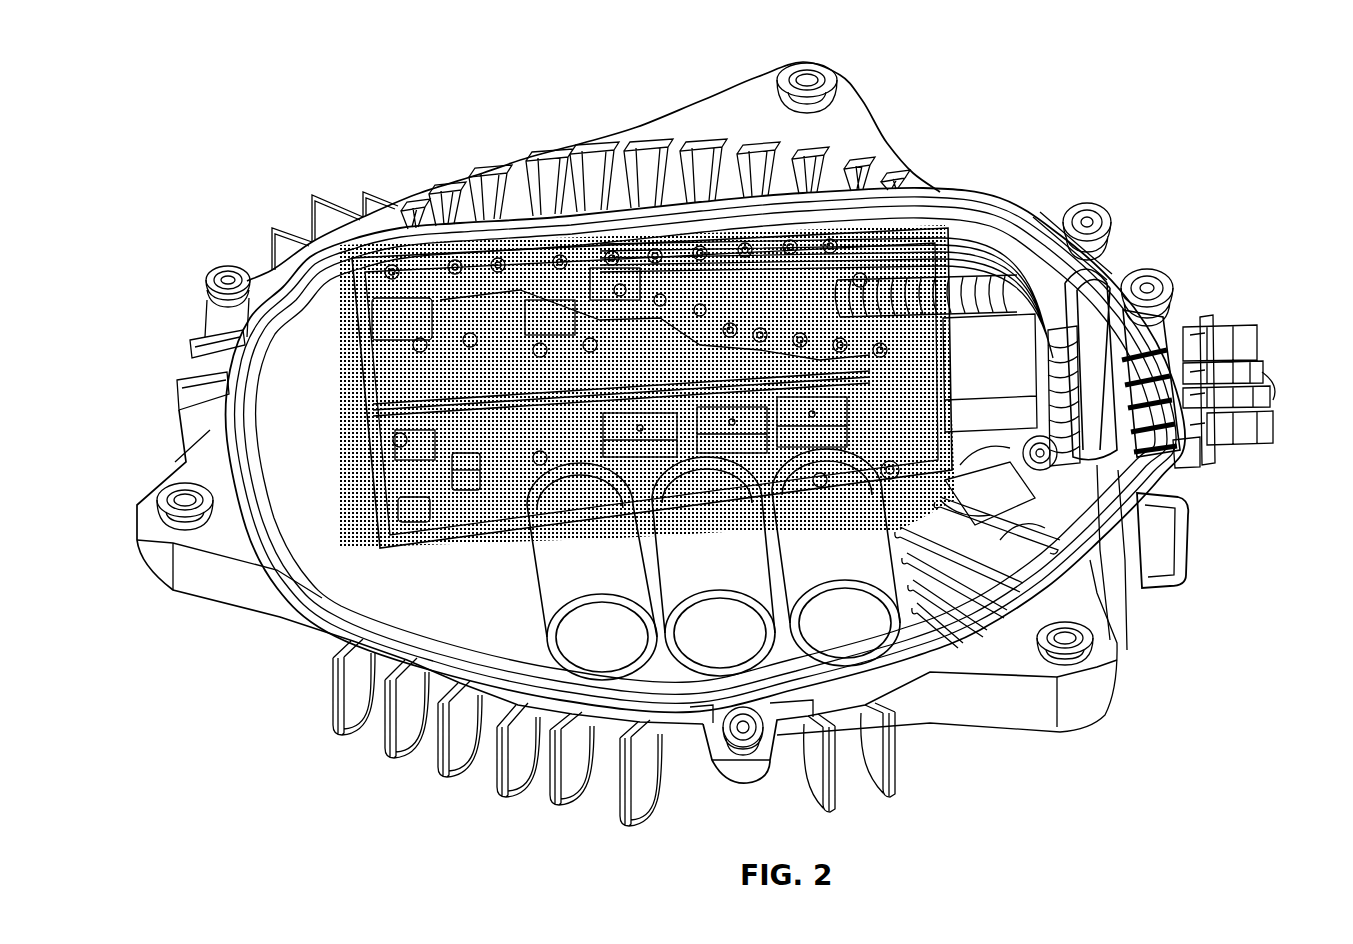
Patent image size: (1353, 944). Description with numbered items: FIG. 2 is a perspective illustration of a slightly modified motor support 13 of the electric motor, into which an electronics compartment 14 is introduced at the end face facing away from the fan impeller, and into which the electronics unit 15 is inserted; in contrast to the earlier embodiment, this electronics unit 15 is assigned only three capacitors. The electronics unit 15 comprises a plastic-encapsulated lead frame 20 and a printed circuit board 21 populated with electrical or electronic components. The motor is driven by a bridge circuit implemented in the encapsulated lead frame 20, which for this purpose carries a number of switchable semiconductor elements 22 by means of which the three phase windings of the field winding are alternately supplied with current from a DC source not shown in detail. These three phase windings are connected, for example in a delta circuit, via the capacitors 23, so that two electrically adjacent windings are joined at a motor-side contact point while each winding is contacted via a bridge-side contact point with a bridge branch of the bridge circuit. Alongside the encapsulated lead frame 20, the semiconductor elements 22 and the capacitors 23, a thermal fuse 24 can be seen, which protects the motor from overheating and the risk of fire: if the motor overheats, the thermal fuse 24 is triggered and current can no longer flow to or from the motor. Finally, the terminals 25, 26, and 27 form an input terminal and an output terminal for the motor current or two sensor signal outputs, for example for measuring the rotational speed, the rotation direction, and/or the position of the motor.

The motor support 13 is at (885, 126).
The electronics compartment 14 is at (952, 223).
The electronics unit 15 is at (413, 285).
The encapsulated lead frame 20 is at (397, 463).
The printed circuit board 21 is at (517, 250).
The semiconductor elements 22 is at (470, 453).
The capacitors 23 is at (597, 647).
The thermal fuse 24 is at (987, 507).
The terminal 25 is at (1258, 445).
The terminal 26 is at (1213, 337).
The terminal 27 is at (1262, 372).